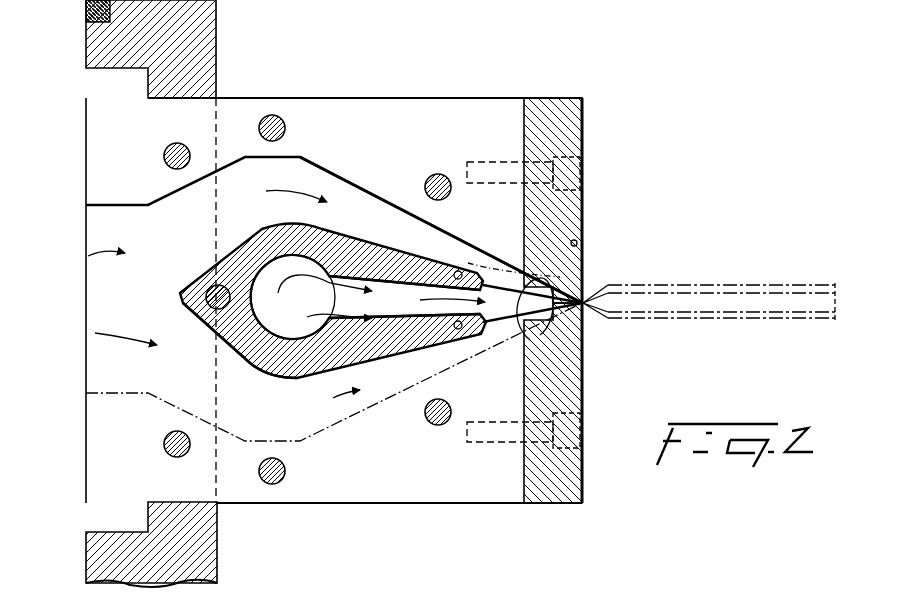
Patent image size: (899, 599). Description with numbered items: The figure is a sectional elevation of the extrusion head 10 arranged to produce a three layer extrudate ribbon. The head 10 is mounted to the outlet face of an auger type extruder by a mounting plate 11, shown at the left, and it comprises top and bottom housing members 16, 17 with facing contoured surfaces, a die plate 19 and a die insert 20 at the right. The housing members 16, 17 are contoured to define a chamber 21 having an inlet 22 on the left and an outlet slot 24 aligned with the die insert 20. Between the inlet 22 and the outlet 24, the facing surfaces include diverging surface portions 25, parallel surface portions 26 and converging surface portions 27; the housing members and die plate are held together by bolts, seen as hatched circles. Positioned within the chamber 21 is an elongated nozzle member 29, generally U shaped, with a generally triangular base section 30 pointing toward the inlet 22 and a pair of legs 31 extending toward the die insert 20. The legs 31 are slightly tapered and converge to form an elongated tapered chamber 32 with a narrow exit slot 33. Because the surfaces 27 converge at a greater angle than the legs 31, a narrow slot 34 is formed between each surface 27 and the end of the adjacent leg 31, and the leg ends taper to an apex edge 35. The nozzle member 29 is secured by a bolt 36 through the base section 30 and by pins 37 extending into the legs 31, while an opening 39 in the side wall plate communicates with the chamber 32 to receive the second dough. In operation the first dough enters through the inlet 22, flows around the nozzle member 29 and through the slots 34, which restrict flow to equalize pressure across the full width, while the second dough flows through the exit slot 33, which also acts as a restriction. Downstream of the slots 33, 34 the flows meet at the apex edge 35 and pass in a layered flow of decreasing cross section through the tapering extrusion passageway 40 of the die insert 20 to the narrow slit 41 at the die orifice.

The extrusion head 10 is at (590, 130).
The mounting plate 11 is at (105, 48).
The top housing member 16 is at (437, 103).
The bottom housing member 17 is at (440, 503).
The die plate 19 is at (580, 478).
The die insert 20 is at (582, 322).
The chamber 21 is at (280, 172).
The inlet 22 is at (108, 232).
The outlet slot 24 is at (503, 272).
The diverging surface portions 25 is at (192, 185).
The parallel surface portions 26 is at (254, 158).
The converging surface portions 27 is at (353, 190).
The nozzle member 29 is at (247, 370).
The triangular base section 30 is at (207, 320).
The legs 31 is at (397, 335).
The elongated tapered chamber 32 is at (352, 275).
The exit slot 33 is at (582, 292).
The narrow slot 34 is at (468, 264).
The apex edge 35 is at (527, 264).
The bolt 36 is at (187, 295).
The pins 37 is at (577, 242).
The opening 39 is at (310, 270).
The extrusion passageway 40 is at (583, 332).
The narrow slit 41 is at (585, 300).